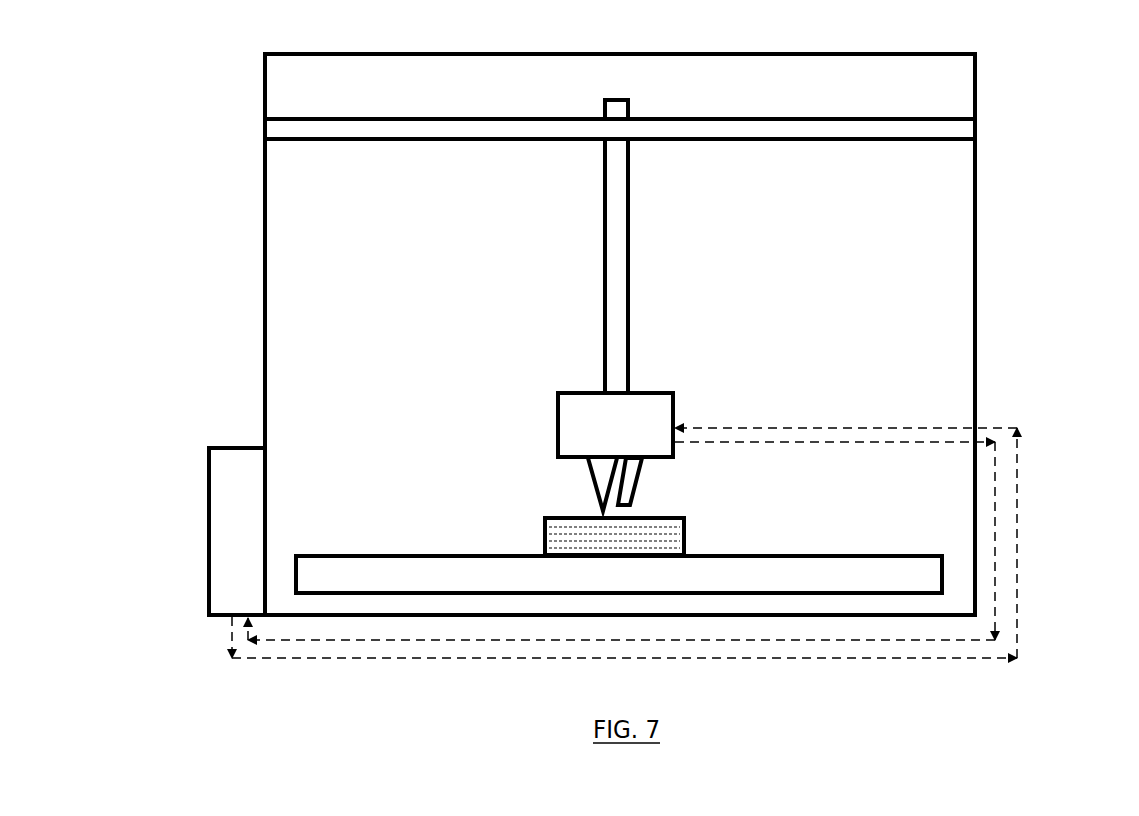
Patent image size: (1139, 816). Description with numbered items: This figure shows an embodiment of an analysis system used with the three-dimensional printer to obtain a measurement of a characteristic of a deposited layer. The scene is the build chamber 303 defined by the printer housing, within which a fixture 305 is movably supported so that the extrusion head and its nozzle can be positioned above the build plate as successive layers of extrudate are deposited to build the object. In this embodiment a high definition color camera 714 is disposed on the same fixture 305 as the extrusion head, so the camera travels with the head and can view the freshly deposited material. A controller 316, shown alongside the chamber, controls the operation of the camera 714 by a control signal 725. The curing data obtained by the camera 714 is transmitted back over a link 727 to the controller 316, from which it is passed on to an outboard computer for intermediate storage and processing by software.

The build chamber 303 is at (447, 87).
The fixture 305 is at (633, 434).
The controller 316 is at (250, 541).
The high definition color camera 714 is at (643, 480).
The control signal 725 is at (1015, 568).
The link 727 is at (510, 640).